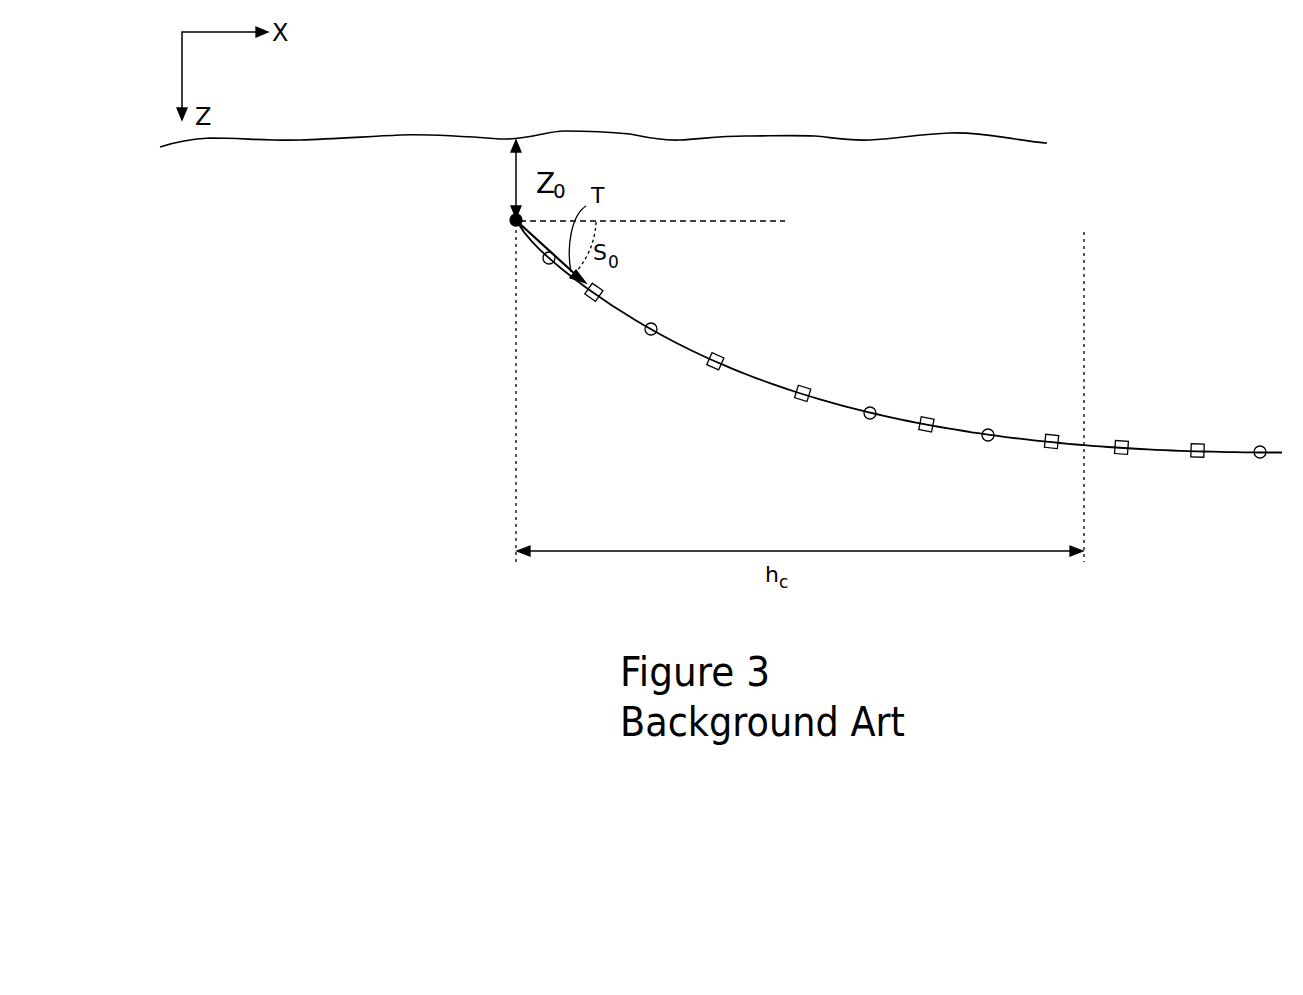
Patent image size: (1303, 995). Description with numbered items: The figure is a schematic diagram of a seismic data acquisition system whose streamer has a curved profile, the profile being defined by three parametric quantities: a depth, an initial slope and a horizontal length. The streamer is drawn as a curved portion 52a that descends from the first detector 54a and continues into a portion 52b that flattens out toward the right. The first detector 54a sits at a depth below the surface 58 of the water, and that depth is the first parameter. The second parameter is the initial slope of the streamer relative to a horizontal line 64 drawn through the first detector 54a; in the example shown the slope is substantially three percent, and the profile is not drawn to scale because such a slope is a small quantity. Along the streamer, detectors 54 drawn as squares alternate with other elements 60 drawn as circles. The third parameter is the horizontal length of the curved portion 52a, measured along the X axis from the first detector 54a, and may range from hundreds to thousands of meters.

The surface of the water 58 is at (725, 134).
The horizontal line 64 is at (722, 221).
The first detector 54a is at (509, 221).
The node (square marker) 54 is at (605, 288).
The node (circular marker) 60 is at (658, 327).
The cable catenary portion 52a is at (745, 367).
The cable horizontal portion 52b is at (1160, 449).